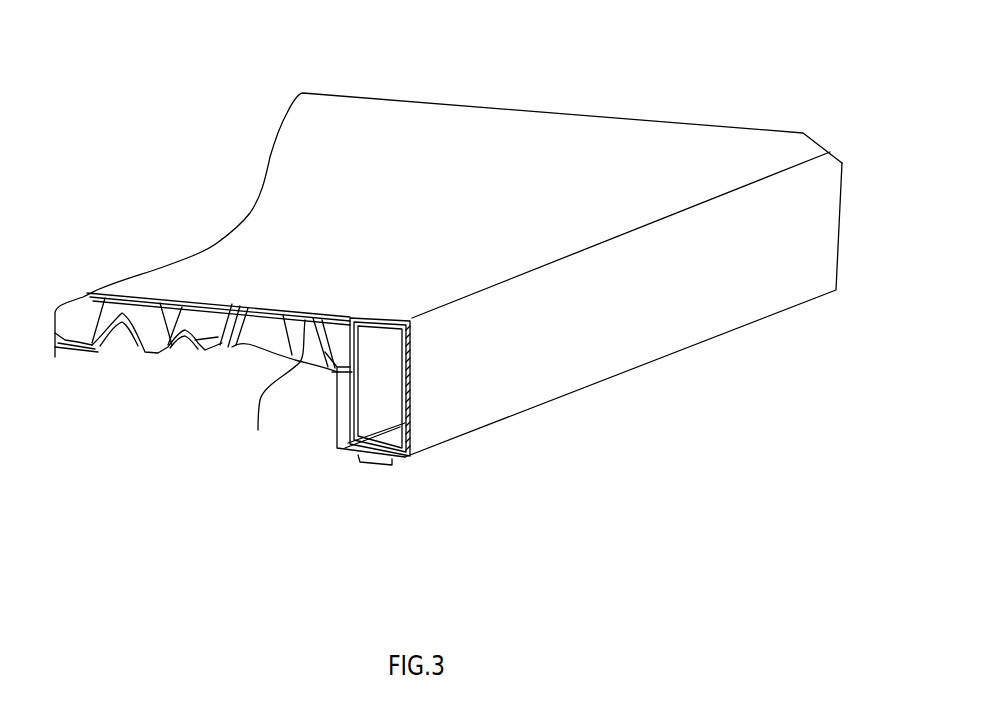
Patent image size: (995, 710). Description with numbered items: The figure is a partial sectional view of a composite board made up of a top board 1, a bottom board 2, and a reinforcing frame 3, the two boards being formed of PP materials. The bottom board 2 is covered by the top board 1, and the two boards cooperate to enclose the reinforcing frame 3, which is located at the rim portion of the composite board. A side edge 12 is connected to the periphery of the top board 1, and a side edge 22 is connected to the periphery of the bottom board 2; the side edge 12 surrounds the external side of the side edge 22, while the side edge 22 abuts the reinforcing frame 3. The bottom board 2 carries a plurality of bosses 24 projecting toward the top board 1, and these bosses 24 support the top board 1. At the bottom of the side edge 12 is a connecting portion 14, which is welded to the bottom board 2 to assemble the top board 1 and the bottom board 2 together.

The top board 1 is at (560, 155).
The side edge 12 is at (550, 365).
The bottom board 2 is at (153, 357).
The bosses 24 is at (271, 395).
The reinforcing frame 3 is at (373, 405).
The side edge 22 is at (397, 403).
The connecting portion 14 is at (392, 464).